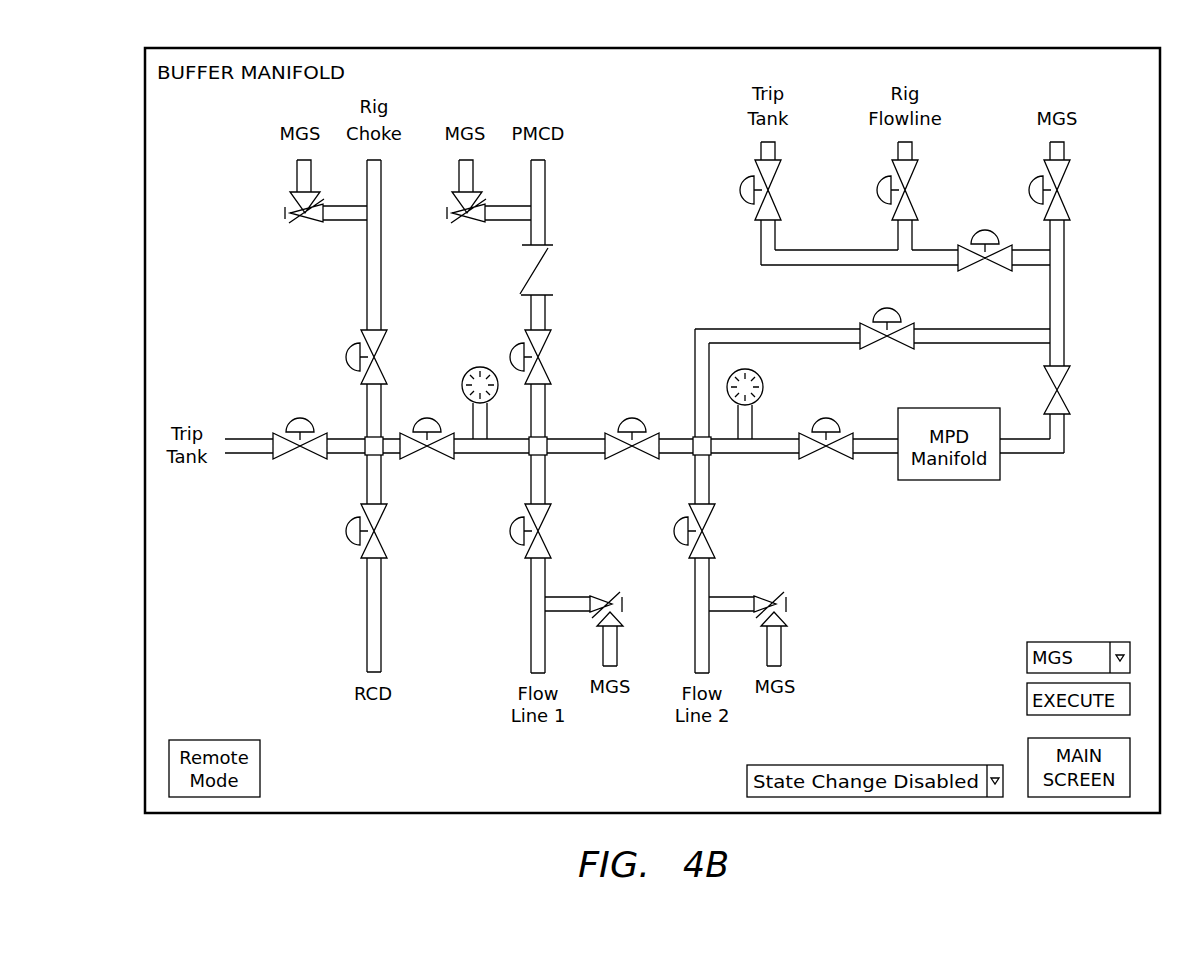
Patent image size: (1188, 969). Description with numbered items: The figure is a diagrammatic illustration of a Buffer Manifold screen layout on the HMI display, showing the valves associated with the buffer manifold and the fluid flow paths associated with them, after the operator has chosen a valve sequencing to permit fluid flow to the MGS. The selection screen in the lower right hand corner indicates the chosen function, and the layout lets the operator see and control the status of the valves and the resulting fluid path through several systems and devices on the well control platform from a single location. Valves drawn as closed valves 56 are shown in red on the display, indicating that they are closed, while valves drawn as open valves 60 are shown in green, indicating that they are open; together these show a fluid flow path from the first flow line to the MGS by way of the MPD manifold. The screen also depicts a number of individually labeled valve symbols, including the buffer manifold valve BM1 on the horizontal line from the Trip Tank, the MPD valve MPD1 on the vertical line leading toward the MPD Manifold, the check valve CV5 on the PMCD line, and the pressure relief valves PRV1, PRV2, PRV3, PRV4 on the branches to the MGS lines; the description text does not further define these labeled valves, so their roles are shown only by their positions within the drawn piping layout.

The closed valve 56 is at (345, 363).
The open valve 60 is at (632, 414).
The buffer manifold valve BM1 is at (300, 450).
The MPD valve MPD1 is at (1084, 390).
The check valve CV5 is at (558, 270).
The pressure relief valve PRV1 is at (586, 616).
The pressure relief valve PRV2 is at (750, 616).
The pressure relief valve PRV3 is at (326, 205).
The pressure relief valve PRV4 is at (488, 205).